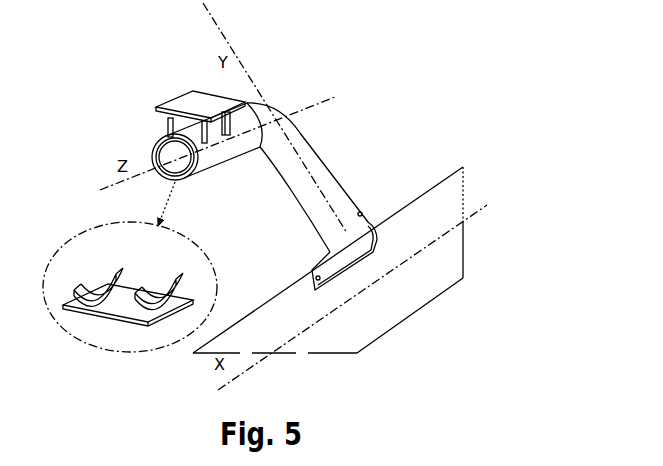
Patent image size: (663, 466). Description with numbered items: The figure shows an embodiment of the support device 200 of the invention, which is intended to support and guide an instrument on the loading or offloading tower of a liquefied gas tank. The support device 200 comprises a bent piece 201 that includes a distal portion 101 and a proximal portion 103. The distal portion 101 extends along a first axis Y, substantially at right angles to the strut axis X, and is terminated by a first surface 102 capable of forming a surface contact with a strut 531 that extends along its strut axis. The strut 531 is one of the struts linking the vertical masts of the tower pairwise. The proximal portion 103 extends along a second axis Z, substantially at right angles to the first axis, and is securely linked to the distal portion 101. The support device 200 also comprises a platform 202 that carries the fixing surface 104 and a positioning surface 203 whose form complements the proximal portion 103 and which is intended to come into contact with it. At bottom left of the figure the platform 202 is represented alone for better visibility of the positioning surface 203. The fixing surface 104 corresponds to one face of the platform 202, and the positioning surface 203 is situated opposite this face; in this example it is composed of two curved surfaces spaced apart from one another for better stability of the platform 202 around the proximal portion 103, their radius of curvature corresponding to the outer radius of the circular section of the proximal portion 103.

The support device 200 is at (160, 34).
The bent piece 201 is at (282, 92).
The distal portion 101 is at (337, 167).
The first surface 102 is at (315, 260).
The proximal portion 103 is at (220, 158).
The fixing surface 104 is at (183, 97).
The platform 202 is at (140, 115).
The positioning surface 203 is at (183, 142).
The strut 531 is at (356, 260).